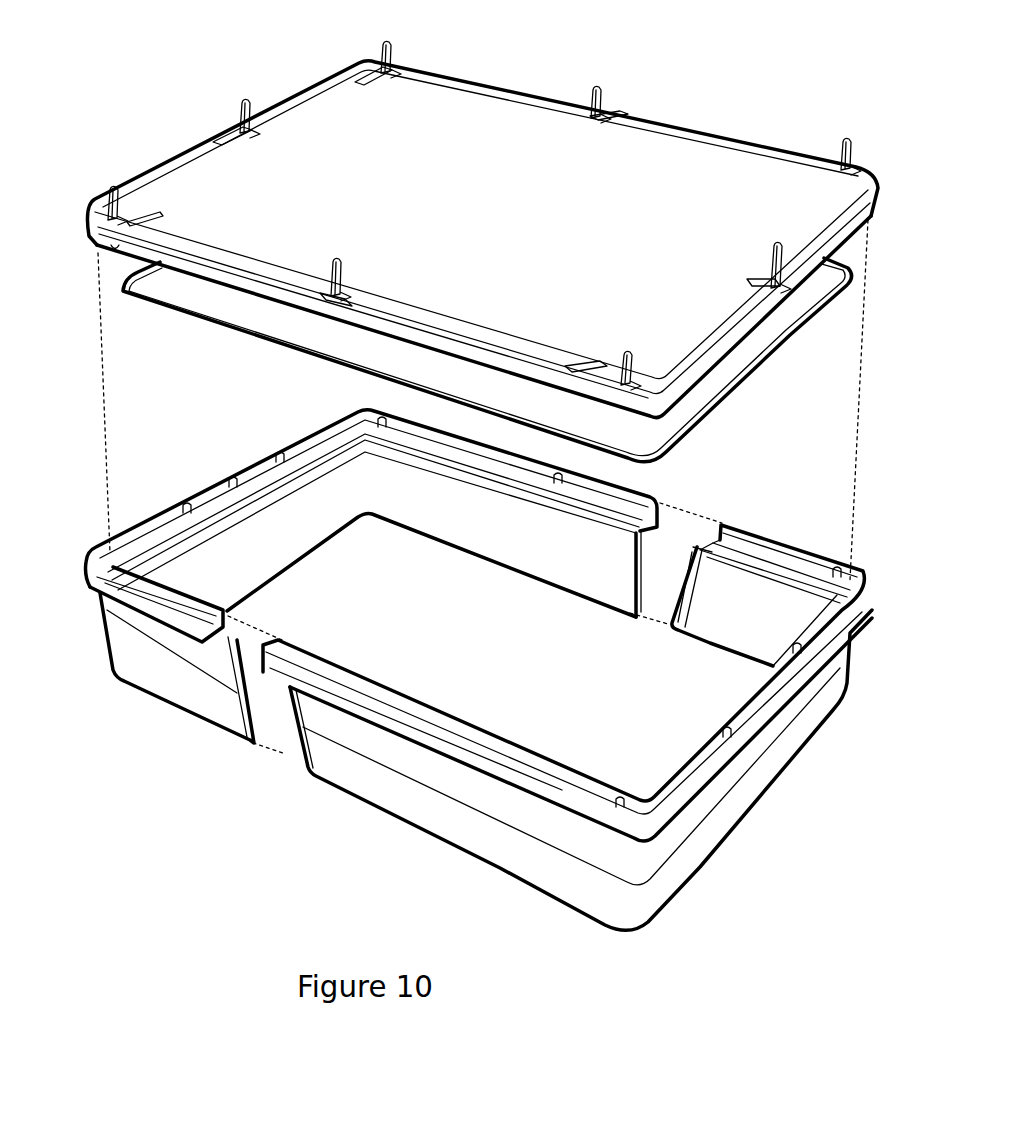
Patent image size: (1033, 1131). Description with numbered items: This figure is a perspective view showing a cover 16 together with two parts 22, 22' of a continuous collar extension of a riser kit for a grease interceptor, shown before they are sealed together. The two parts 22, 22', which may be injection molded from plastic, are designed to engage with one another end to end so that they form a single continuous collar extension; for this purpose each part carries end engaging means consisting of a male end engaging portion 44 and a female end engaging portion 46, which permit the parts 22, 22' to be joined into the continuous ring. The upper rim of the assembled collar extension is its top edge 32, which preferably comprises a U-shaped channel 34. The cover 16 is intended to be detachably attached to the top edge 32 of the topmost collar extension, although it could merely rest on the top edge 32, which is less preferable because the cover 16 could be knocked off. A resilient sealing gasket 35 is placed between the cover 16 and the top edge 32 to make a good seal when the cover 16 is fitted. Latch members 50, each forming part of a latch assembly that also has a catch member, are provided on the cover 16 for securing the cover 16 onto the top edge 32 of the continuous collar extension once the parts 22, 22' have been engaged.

The cover 16 is at (680, 125).
The latch member 50 is at (112, 190).
The resilient sealing gasket 35 is at (242, 335).
The top edge 32 is at (262, 452).
The U-shaped channel 34 is at (175, 520).
The part of continuous collar extension 22 is at (481, 721).
The male end engaging portion 44 is at (630, 600).
The female end engaging portion 46 is at (693, 628).
The part of continuous collar extension 22' is at (753, 623).